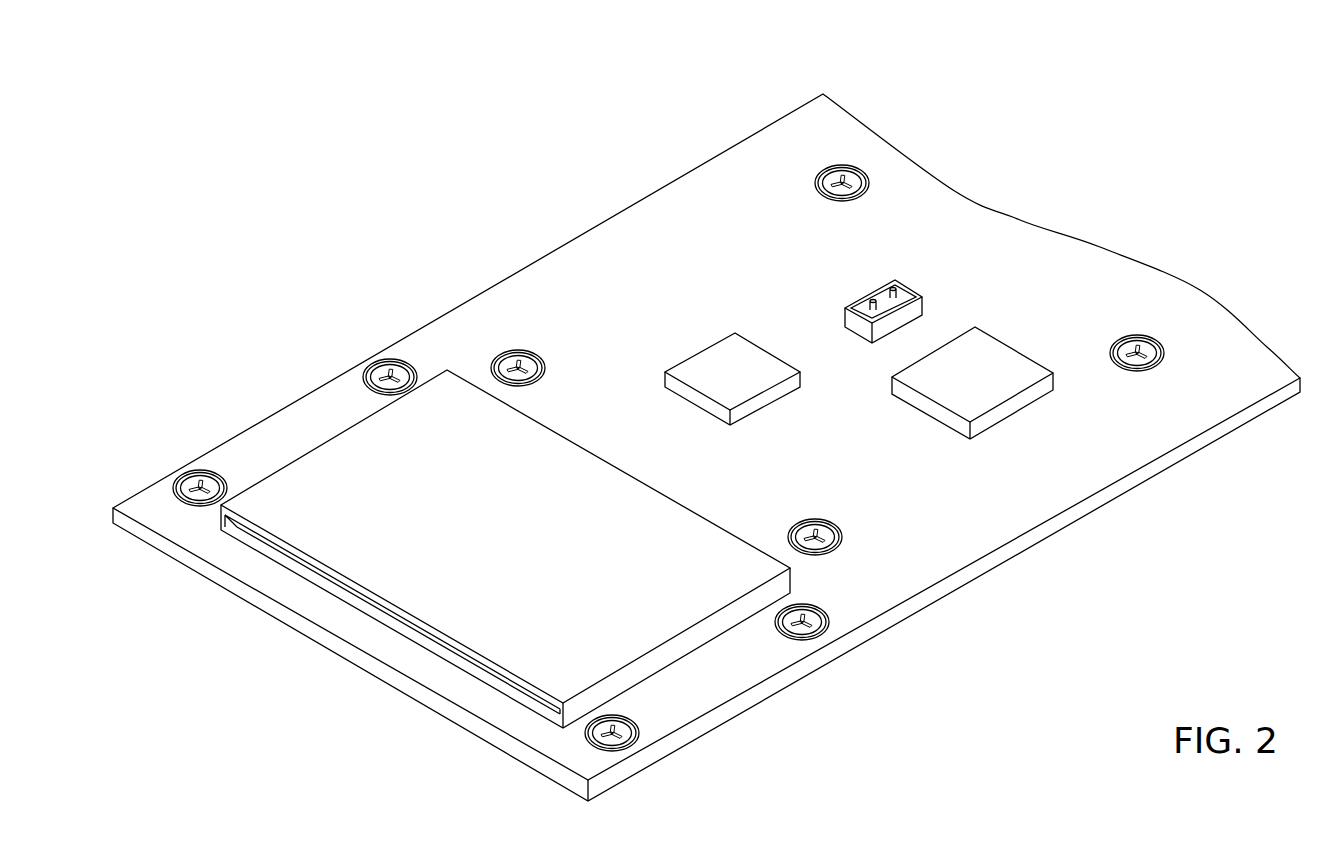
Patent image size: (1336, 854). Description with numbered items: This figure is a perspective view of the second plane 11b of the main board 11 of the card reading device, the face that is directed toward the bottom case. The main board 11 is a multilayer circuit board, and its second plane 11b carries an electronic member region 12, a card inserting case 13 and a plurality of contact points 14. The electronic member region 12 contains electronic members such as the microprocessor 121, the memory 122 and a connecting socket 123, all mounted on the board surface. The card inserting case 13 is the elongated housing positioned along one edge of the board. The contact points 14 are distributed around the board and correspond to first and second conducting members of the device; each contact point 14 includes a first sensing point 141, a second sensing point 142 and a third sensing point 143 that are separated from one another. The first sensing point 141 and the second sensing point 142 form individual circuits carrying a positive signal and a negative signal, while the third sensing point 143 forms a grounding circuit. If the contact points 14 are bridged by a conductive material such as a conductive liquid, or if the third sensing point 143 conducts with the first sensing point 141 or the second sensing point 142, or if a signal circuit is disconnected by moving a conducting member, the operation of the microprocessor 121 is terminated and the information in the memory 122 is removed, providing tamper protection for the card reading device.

The main board 11 is at (706, 463).
The second plane 11b is at (703, 678).
The electronic member region 12 is at (915, 257).
The microprocessor 121 is at (728, 363).
The memory 122 is at (962, 372).
The connecting socket 123 is at (878, 300).
The card inserting case 13 is at (497, 569).
The contact point 14 is at (513, 360).
The first sensing point 141 is at (177, 487).
The second sensing point 142 is at (208, 485).
The third sensing point 143 is at (223, 497).